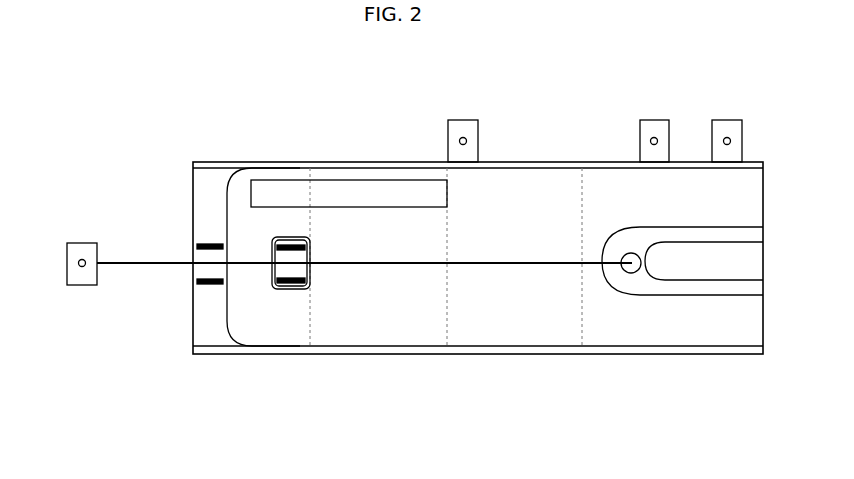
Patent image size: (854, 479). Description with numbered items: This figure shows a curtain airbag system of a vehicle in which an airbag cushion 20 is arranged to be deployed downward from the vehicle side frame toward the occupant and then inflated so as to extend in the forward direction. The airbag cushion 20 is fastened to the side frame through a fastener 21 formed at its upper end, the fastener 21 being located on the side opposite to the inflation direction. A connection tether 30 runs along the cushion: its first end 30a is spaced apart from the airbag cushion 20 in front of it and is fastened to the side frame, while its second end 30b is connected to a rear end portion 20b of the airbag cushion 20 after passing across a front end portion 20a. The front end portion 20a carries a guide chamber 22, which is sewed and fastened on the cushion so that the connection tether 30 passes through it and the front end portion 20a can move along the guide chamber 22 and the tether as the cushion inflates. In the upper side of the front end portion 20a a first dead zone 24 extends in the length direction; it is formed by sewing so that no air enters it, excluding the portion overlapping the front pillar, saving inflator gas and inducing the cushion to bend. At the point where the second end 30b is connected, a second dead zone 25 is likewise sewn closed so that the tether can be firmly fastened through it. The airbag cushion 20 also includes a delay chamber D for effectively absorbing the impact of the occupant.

The airbag cushion 20 is at (369, 366).
The front end portion 20a is at (200, 193).
The rear end portion 20b is at (627, 188).
The fastener 21 is at (465, 119).
The guide chamber 22 is at (290, 290).
The first dead zone 24 is at (347, 192).
The second dead zone 25 is at (640, 272).
The connection tether 30 is at (509, 268).
The first end 30a is at (122, 268).
The second end 30b is at (590, 268).
The delay chamber D is at (720, 267).